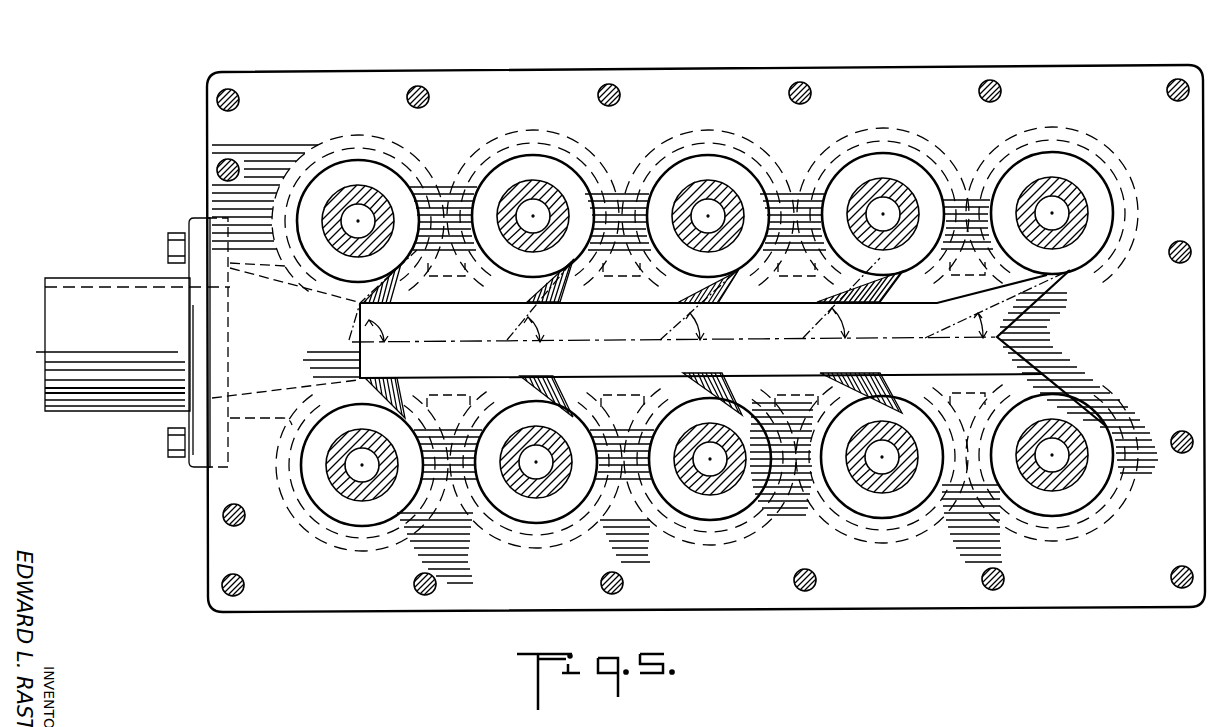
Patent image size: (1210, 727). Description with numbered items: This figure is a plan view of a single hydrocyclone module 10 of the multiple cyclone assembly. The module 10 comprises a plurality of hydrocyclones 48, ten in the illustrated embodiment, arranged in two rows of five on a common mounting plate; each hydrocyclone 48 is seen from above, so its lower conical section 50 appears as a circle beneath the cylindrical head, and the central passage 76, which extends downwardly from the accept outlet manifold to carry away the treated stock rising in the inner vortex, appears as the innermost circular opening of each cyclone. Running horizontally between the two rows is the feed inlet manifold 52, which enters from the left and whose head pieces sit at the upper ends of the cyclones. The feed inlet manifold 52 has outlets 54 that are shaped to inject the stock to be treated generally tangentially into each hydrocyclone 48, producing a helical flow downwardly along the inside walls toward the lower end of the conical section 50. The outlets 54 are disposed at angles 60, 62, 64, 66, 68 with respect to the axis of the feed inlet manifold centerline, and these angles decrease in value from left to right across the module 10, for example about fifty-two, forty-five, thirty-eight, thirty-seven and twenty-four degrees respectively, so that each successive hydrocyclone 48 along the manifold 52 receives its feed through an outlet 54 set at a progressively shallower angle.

The hydrocyclone module 10 is at (897, 51).
The hydrocyclone 48 is at (1133, 233).
The lower conical section 50 is at (420, 173).
The feed inlet manifold 52 is at (272, 347).
The outlets 54 is at (402, 297).
The angle 60 is at (392, 329).
The angle 62 is at (547, 325).
The angle 64 is at (707, 325).
The angle 66 is at (850, 325).
The angle 68 is at (997, 318).
The central passage 76 is at (374, 187).